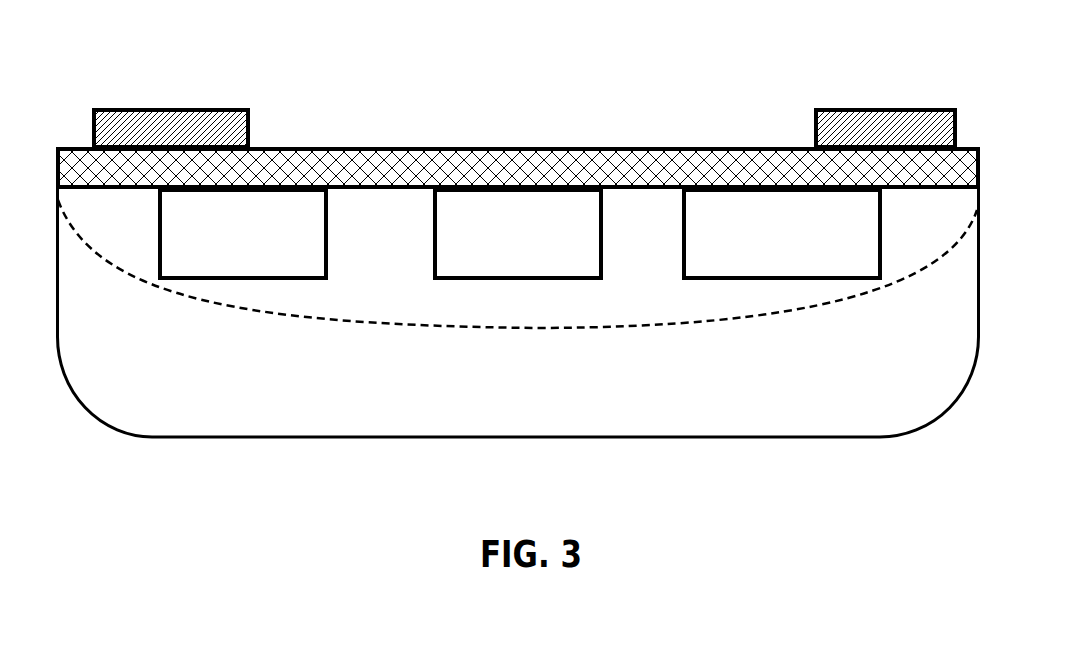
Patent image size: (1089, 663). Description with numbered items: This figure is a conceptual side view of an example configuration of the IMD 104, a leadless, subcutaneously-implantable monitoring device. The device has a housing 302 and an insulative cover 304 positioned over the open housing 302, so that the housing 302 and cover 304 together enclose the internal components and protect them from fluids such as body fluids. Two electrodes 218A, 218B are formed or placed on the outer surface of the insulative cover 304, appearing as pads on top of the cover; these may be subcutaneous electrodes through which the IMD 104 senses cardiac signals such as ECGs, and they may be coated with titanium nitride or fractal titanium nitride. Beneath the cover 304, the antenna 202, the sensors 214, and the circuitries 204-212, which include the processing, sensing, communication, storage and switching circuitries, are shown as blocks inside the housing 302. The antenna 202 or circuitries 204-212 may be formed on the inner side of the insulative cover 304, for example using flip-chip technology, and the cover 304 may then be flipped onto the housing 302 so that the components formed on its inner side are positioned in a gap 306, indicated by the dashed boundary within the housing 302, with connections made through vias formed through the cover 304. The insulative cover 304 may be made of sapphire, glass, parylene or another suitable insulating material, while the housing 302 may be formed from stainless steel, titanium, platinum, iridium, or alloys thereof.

The IMD 104 is at (962, 73).
The antenna 202 is at (262, 258).
The circuitries 204-212 is at (827, 260).
The sensors 214 is at (538, 260).
The electrode 218A is at (240, 108).
The electrode 218B is at (818, 108).
The housing 302 is at (565, 396).
The insulative cover 304 is at (610, 147).
The gap 306 is at (840, 295).